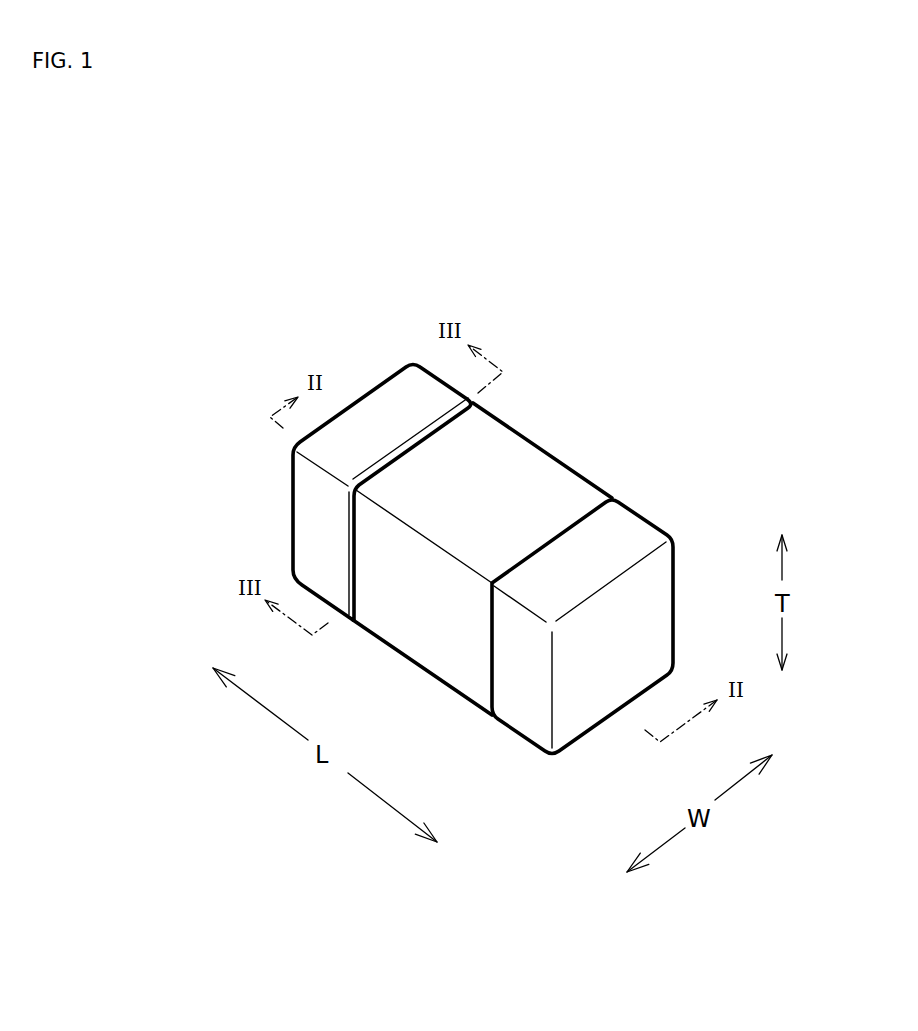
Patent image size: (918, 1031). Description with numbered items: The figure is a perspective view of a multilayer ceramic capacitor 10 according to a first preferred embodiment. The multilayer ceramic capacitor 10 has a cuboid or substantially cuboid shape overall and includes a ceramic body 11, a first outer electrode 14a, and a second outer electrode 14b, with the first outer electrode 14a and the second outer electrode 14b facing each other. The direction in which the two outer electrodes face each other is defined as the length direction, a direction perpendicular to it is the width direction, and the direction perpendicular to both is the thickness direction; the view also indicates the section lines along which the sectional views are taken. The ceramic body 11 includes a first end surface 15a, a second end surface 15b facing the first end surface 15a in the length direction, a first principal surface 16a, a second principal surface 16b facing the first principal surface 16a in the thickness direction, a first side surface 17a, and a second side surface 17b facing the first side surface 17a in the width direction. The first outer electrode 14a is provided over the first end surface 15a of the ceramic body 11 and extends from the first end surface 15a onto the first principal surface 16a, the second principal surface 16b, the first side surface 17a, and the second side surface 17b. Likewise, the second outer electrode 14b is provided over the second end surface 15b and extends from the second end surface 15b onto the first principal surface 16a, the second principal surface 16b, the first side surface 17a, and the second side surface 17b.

The multilayer ceramic capacitor 10 is at (466, 550).
The ceramic body 11 is at (461, 613).
The first outer electrode 14a is at (390, 398).
The second outer electrode 14b is at (637, 525).
The first end surface 15a is at (322, 512).
The second end surface 15b is at (562, 683).
The first principal surface 16a is at (567, 489).
The second principal surface 16b is at (470, 678).
The first side surface 17a is at (428, 633).
The second side surface 17b is at (583, 498).